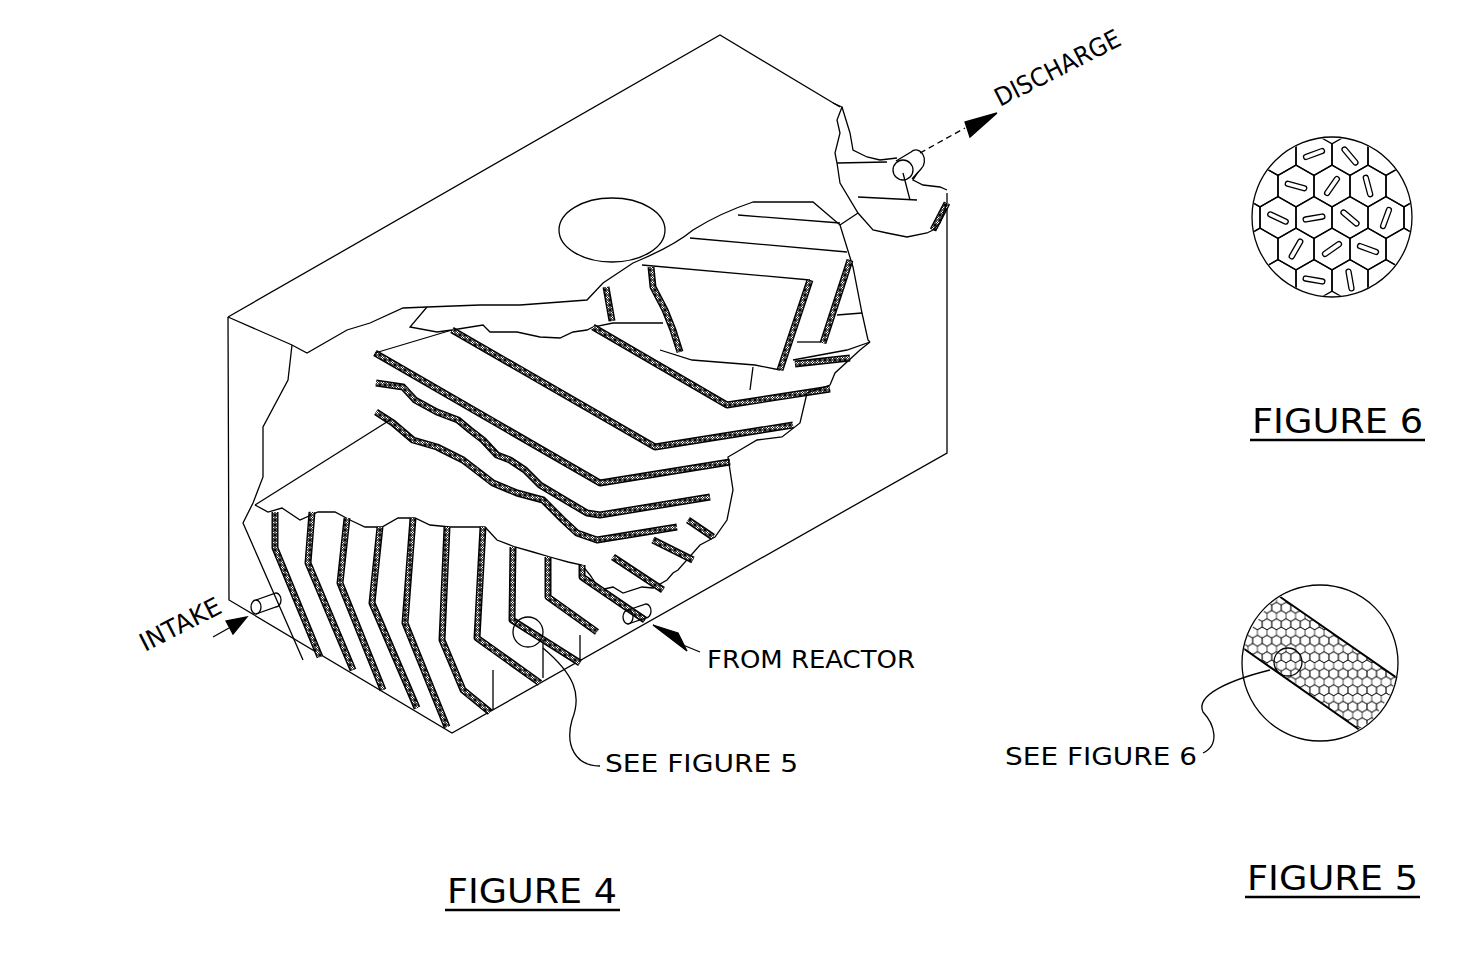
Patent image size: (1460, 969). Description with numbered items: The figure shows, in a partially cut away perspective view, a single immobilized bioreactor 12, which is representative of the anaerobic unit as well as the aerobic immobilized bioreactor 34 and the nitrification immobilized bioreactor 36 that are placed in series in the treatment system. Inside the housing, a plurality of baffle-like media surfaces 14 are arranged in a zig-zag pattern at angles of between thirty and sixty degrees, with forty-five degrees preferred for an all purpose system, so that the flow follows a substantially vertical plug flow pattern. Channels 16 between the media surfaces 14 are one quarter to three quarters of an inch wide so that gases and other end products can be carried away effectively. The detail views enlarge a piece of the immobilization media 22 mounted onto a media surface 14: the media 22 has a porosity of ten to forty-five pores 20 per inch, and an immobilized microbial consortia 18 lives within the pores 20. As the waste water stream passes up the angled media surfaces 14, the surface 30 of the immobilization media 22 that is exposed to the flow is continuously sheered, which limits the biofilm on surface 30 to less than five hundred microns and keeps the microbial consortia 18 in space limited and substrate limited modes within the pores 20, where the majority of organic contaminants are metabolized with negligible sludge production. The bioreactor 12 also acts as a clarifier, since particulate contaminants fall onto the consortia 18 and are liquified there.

In FIG. 4, the immobilized bioreactor 12 is at (500, 260).
In FIG. 4, the baffle-like media surface 14 is at (307, 652).
In FIG. 4, the channel 16 is at (365, 673).
In FIG. 6, the microbial consortia 18 is at (1337, 163).
In FIG. 6, the pore 20 is at (1365, 240).
In FIG. 5, the immobilization media 22 is at (1342, 720).
In FIG. 4, the surface of immobilization media 30 is at (478, 670).
In FIG. 5, the surface of immobilization media 30 is at (1313, 617).
In FIG. 4, the aerobic immobilized bioreactor 34 is at (445, 379).
In FIG. 4, the nitrification immobilized bioreactor 36 is at (530, 211).